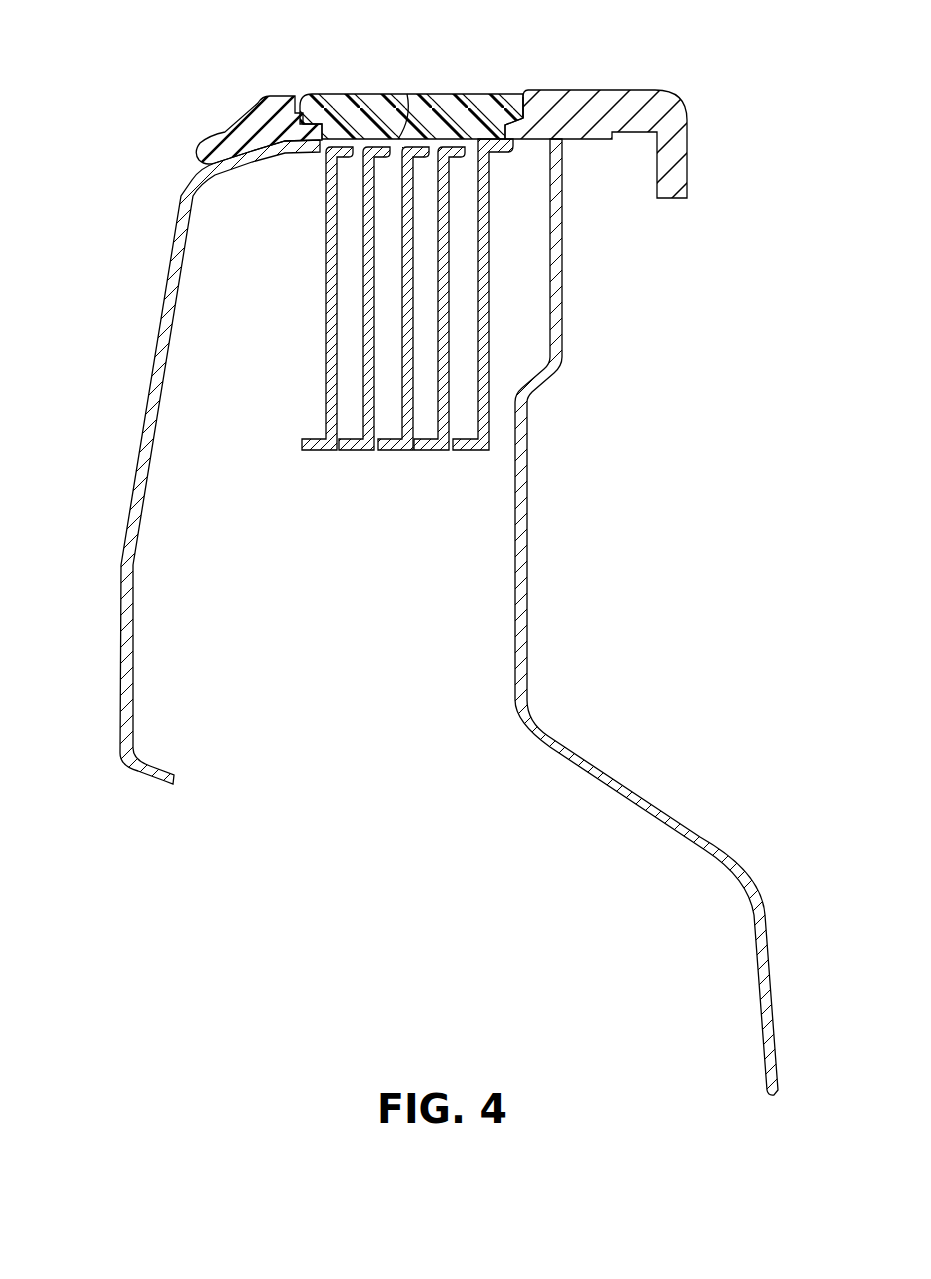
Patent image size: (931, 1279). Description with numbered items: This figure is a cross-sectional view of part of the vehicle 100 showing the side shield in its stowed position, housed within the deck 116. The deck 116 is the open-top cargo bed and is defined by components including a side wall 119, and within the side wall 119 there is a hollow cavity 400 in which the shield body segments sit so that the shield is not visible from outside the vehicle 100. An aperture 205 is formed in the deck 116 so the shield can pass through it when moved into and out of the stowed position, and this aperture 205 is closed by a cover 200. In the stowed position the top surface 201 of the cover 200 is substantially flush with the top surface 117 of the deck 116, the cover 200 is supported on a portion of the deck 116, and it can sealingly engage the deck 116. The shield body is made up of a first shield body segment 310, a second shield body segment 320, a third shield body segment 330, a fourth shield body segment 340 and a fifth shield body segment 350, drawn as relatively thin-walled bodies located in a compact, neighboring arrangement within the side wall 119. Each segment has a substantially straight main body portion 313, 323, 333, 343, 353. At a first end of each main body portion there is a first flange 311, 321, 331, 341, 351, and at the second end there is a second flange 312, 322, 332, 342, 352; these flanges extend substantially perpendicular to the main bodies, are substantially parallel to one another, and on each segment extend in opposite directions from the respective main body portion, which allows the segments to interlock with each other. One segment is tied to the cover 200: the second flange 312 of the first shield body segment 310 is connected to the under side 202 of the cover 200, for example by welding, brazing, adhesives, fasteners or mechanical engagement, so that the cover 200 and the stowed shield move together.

The vehicle 100 is at (118, 98).
The deck 116 is at (150, 323).
The top surface of the deck 117 is at (601, 90).
The side wall 119 is at (528, 524).
The cover 200 is at (342, 94).
The top surface of the cover 201 is at (444, 94).
The under side of the cover 202 is at (407, 94).
The aperture 205 is at (529, 84).
The hollow cavity 400 is at (213, 470).
The first shield body segment 310 is at (485, 458).
The first flange 311 is at (466, 438).
The second flange 312 is at (507, 148).
The main body portion 313 is at (489, 300).
The second shield body segment 320 is at (447, 458).
The first flange 321 is at (430, 435).
The second flange 322 is at (462, 160).
The main body portion 323 is at (450, 275).
The third shield body segment 330 is at (409, 458).
The first flange 331 is at (388, 438).
The second flange 332 is at (420, 157).
The main body portion 333 is at (400, 313).
The fourth shield body segment 340 is at (370, 458).
The first flange 341 is at (350, 438).
The second flange 342 is at (382, 157).
The main body portion 343 is at (362, 286).
The fifth shield body segment 350 is at (332, 458).
The first flange 351 is at (303, 451).
The second flange 352 is at (345, 157).
The main body portion 353 is at (323, 262).